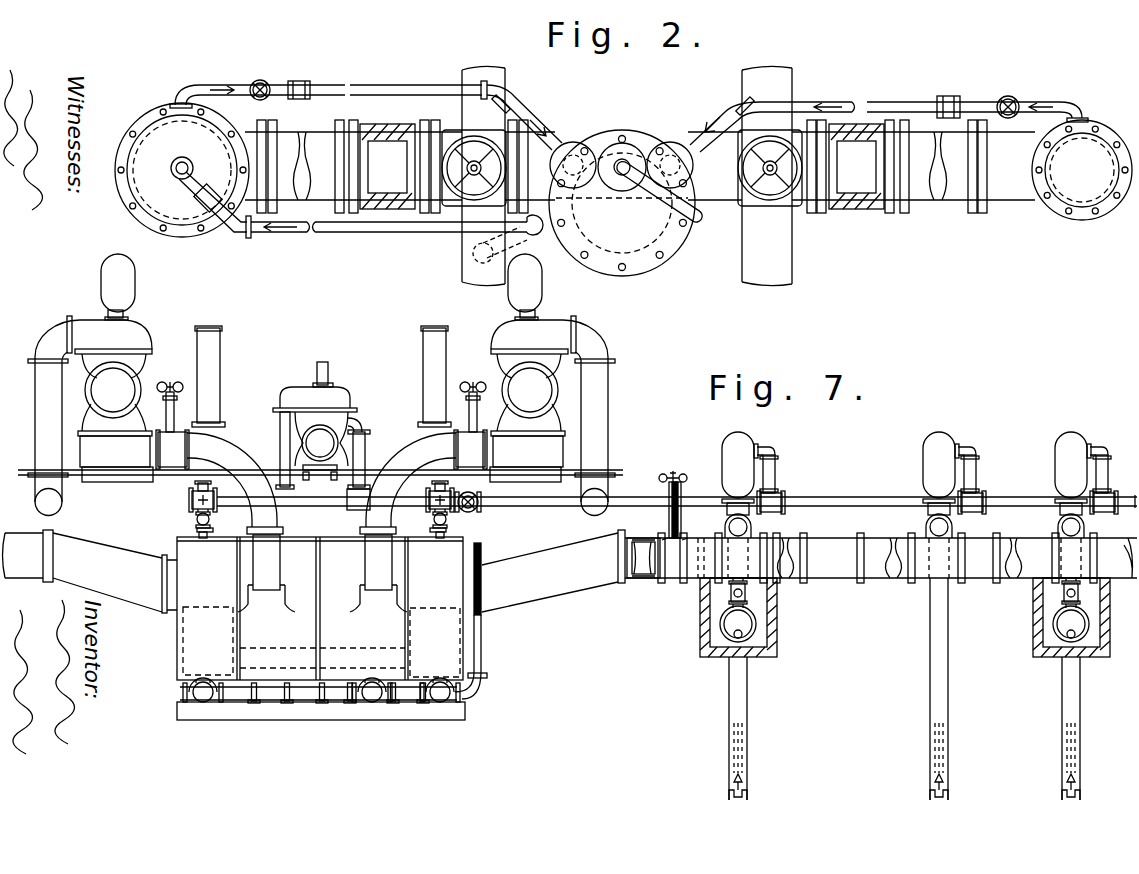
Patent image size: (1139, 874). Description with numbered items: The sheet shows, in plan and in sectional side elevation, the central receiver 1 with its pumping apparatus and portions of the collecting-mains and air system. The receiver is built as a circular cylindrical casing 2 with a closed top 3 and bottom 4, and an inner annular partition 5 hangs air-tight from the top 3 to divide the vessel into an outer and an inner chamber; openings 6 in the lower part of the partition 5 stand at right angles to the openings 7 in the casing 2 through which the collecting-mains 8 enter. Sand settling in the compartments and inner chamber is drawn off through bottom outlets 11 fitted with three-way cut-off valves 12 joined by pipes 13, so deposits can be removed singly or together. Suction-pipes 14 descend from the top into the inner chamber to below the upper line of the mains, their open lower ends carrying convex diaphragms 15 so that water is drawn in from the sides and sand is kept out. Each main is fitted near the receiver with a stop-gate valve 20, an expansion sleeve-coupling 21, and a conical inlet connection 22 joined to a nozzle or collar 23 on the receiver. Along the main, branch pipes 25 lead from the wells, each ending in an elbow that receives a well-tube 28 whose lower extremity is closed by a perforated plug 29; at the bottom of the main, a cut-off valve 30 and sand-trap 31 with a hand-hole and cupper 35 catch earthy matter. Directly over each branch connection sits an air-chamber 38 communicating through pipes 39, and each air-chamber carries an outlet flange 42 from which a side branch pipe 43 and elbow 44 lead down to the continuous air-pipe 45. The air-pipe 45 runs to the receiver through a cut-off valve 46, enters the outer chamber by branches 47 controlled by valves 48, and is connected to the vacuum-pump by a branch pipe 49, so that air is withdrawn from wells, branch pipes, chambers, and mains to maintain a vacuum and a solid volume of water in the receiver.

In FIG. 7, the central receiver 1 is at (308, 694).
In FIG. 7, the casing 2 is at (176, 636).
In FIG. 7, the top 3 is at (320, 526).
In FIG. 7, the bottom 4 is at (277, 690).
In FIG. 7, the annular partition 5 is at (328, 608).
In FIG. 7, the openings 6 is at (322, 659).
In FIG. 7, the openings 7 is at (320, 626).
In FIG. 7, the collecting-mains 8 is at (334, 572).
In FIG. 7, the outlets 11 is at (203, 682).
In FIG. 7, the three-way cut-off valves 12 is at (203, 704).
In FIG. 7, the pipes 13 is at (312, 696).
In FIG. 7, the suction-pipes 14 is at (321, 483).
In FIG. 7, the convex diaphragms 15 is at (322, 581).
In FIG. 2, the stop-gate valves 20 is at (786, 206).
In FIG. 7, the stop-gate valves 20 is at (668, 519).
In FIG. 2, the expansion sleeve-couplings 21 is at (622, 162).
In FIG. 7, the expansion sleeve-couplings 21 is at (637, 573).
In FIG. 7, the inlet connections 22 is at (311, 572).
In FIG. 7, the nozzle or collar 23 is at (492, 612).
In FIG. 7, the branch pipes 25 is at (748, 527).
In FIG. 7, the tube 28 is at (930, 688).
In FIG. 7, the plug 29 is at (1061, 793).
In FIG. 7, the cut-off valve 30 is at (746, 596).
In FIG. 7, the sand-trap 31 is at (720, 620).
In FIG. 7, the hand-hole and cupper 35 is at (709, 640).
In FIG. 7, the air-chambers 38 is at (722, 450).
In FIG. 7, the pipes 39 is at (727, 523).
In FIG. 7, the outlet-connecting flange 42 is at (722, 500).
In FIG. 7, the side branch pipe 43 is at (1110, 481).
In FIG. 7, the elbow 44 is at (1100, 447).
In FIG. 2, the air-pipe 45 is at (889, 116).
In FIG. 7, the air-pipe 45 is at (829, 527).
In FIG. 7, the cut-off valve 46 is at (471, 513).
In FIG. 7, the branches 47 is at (321, 471).
In FIG. 7, the valves 48 is at (194, 520).
In FIG. 7, the branch pipe 49 is at (369, 470).